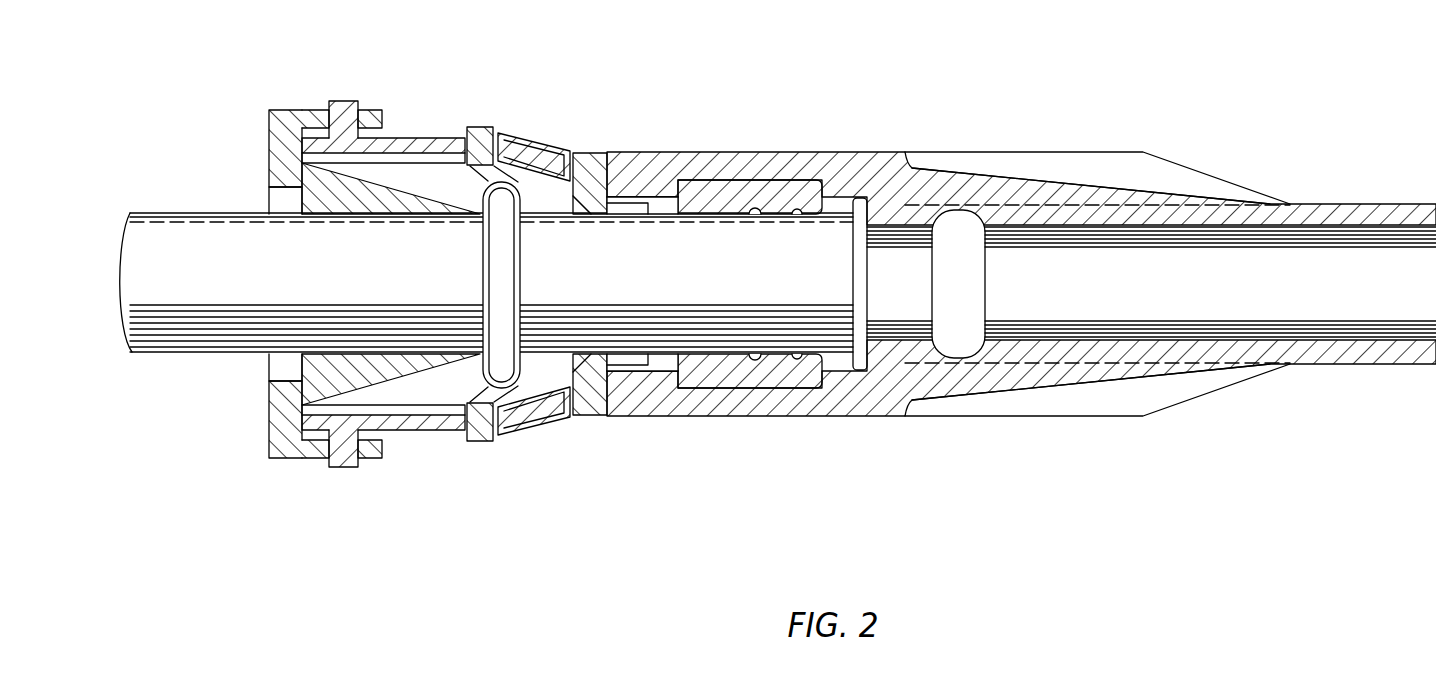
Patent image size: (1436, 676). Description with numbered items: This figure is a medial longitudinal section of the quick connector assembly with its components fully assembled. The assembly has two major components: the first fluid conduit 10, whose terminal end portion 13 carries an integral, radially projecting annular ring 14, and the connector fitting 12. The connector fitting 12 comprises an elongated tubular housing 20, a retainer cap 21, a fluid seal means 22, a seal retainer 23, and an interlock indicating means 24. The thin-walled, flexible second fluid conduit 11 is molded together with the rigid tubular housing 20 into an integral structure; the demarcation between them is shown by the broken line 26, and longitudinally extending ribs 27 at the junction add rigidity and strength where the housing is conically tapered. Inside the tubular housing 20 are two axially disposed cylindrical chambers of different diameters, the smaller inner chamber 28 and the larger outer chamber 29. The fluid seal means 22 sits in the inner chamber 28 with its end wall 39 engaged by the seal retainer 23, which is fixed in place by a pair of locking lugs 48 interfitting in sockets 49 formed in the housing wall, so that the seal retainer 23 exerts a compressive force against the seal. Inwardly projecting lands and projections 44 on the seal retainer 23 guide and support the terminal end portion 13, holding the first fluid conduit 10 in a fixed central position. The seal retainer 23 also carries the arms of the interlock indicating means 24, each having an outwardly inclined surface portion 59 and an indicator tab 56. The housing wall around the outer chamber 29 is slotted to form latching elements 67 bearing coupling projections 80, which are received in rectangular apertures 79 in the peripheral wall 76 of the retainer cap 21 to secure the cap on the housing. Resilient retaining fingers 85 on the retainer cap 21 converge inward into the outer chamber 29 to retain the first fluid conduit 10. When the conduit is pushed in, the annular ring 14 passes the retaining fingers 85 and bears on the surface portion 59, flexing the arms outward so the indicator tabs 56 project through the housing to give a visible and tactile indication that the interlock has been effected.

The first fluid conduit 10 is at (216, 211).
The second fluid conduit 11 is at (1324, 202).
The connector fitting 12 is at (1021, 223).
The terminal end portion 13 is at (737, 323).
The annular ring 14 is at (527, 409).
The tubular housing 20 is at (899, 150).
The retainer cap 21 is at (265, 127).
The fluid seal means 22 is at (783, 190).
The seal retainer 23 is at (653, 381).
The interlock indicating means 24 is at (501, 133).
The broken line 26 is at (1161, 195).
The longitudinally extending ribs 27 is at (1053, 165).
The inner chamber 28 is at (795, 387).
The outer chamber 29 is at (380, 403).
The end wall 39 is at (855, 364).
The projections 44 is at (661, 178).
The locking lugs 48 is at (578, 153).
The sockets 49 is at (598, 153).
The indicator tabs 56 is at (478, 128).
The outwardly inclined surface portion 59 is at (486, 400).
The latching elements 67 is at (407, 137).
The peripheral wall 76 is at (373, 111).
The rectangular apertures 79 is at (312, 113).
The coupling projections 80 is at (345, 101).
The resilient retaining fingers 85 is at (338, 381).